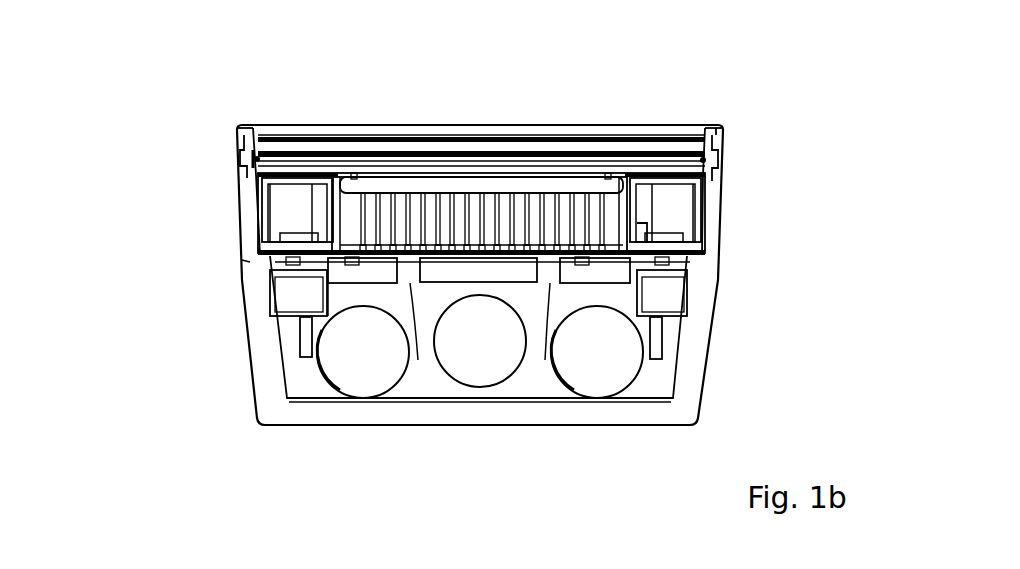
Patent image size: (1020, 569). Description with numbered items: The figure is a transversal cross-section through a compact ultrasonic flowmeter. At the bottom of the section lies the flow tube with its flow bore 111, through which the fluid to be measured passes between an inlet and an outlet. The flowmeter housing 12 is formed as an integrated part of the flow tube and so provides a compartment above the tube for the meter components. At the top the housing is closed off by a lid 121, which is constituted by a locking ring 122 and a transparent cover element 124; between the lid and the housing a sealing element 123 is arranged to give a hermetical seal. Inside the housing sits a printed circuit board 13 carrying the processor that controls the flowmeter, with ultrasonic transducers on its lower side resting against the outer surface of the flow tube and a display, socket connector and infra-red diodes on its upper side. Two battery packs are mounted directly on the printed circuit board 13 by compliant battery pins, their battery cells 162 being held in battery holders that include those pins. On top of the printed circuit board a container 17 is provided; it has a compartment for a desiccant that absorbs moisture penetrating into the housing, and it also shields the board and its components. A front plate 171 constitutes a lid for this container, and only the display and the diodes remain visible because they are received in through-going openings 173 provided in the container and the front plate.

The flowmeter housing 12 is at (707, 270).
The printed circuit board 13 is at (242, 260).
The container 17 is at (703, 200).
The flow bore 111 is at (478, 373).
The lid 121 is at (240, 133).
The locking ring 122 is at (708, 130).
The sealing element 123 is at (717, 155).
The transparent cover element 124 is at (562, 146).
The battery cell 162 is at (590, 350).
The front plate 171 is at (237, 180).
The through-going opening 173 is at (632, 216).